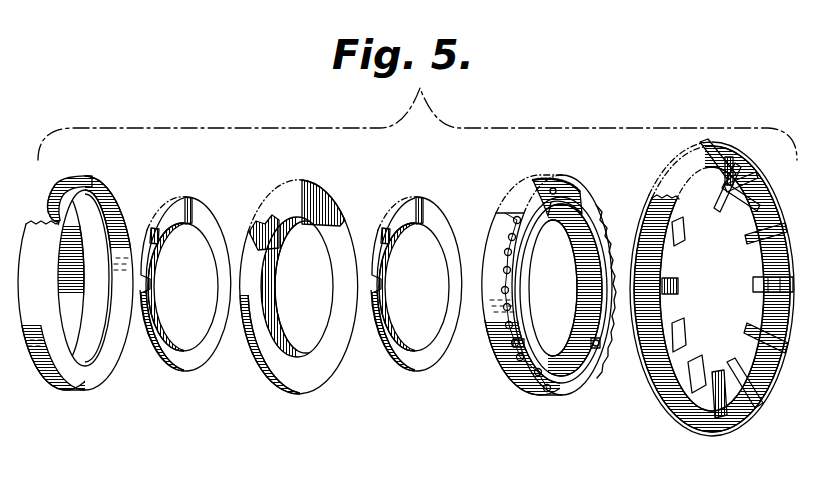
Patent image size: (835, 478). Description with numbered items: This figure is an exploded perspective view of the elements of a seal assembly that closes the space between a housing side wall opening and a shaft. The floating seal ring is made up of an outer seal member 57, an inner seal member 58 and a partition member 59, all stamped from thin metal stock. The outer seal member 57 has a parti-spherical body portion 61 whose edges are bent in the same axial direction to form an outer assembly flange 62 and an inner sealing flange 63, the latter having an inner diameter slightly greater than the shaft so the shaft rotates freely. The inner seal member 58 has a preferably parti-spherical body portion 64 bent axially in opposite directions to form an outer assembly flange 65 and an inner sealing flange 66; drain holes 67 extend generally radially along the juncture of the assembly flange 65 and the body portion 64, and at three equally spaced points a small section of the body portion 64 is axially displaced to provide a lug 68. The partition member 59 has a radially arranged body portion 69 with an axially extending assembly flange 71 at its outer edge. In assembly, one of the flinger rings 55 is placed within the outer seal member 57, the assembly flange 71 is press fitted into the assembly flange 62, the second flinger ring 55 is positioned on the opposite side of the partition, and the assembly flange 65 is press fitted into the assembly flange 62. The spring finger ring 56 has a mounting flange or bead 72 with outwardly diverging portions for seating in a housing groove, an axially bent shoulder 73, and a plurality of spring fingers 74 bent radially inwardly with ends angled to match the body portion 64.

The flinger rings 55 is at (199, 370).
The spring finger ring 56 is at (712, 295).
The outer seal member 57 is at (85, 266).
The inner seal member 58 is at (557, 286).
The partition member 59 is at (303, 295).
The parti-spherical body portion 61 is at (55, 186).
The outer assembly flange 62 is at (79, 177).
The inner sealing flange 63 is at (80, 237).
The body portion 64 is at (548, 378).
The outer assembly flange 65 is at (545, 180).
The inner sealing flange 66 is at (578, 213).
The drain holes 67 is at (611, 232).
The lug 68 is at (551, 194).
The body portion 69 is at (328, 203).
The assembly flange 71 is at (298, 182).
The mounting flange or bead 72 is at (730, 150).
The shoulder 73 is at (737, 165).
The spring fingers 74 is at (762, 280).